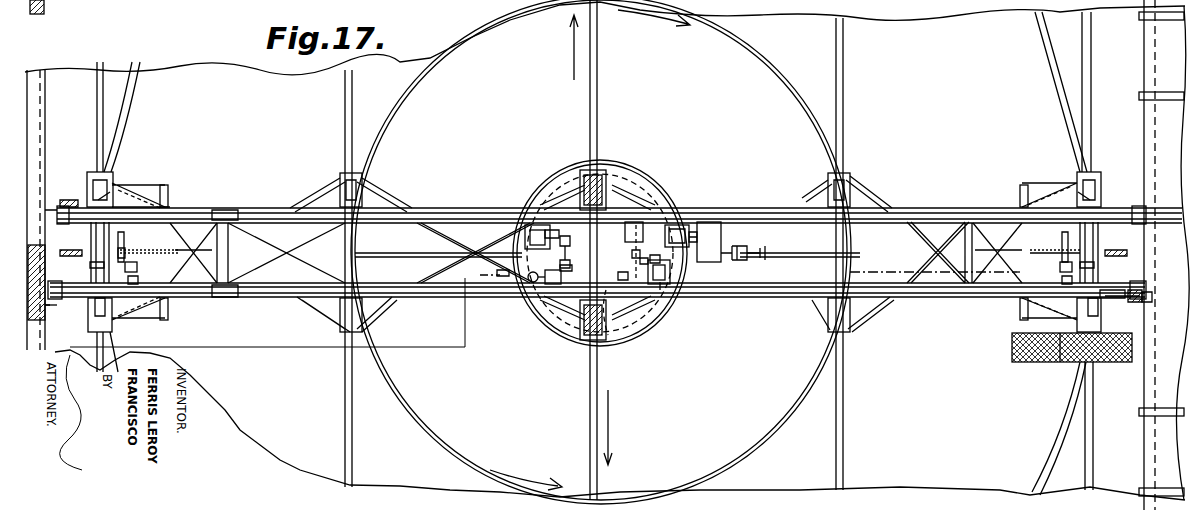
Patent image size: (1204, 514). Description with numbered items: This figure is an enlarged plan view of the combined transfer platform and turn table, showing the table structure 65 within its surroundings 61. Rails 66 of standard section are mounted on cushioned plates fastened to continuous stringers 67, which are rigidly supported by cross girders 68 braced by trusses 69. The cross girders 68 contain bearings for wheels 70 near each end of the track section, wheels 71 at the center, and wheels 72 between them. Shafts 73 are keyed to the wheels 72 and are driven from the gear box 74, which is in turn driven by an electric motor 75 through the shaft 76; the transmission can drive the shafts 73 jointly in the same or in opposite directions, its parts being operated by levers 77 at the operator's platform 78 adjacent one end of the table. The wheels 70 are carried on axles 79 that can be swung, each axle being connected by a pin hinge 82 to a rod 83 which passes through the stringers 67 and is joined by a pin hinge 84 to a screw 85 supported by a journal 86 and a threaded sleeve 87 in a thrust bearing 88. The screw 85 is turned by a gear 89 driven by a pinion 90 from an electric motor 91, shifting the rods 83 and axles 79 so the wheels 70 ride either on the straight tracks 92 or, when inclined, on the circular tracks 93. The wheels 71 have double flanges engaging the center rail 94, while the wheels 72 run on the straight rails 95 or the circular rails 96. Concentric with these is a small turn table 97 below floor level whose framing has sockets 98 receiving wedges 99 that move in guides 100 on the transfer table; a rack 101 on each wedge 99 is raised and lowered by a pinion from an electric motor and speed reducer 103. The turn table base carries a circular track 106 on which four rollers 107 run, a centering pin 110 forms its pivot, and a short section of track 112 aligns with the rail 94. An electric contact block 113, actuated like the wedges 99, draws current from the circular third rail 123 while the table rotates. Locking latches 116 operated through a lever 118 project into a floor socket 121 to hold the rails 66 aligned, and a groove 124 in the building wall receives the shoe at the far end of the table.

The frame 61 is at (268, 438).
The truss assembly 65 is at (278, 322).
The rails 66 is at (888, 210).
The stringers 67 is at (925, 208).
The cross girders 68 is at (110, 176).
The trusses 69 is at (310, 190).
The wheels 70 is at (104, 196).
The wheels 71 is at (598, 180).
The wheels 72 is at (366, 258).
The shafts 73 is at (390, 252).
The gear box 74 is at (712, 240).
The electric motor 75 is at (677, 224).
The shaft 76 is at (693, 230).
The levers 77 is at (1064, 364).
The operator's platform 78 is at (1024, 374).
The axles 79 is at (130, 190).
The pin hinge 82 is at (166, 188).
The rods 83 is at (172, 204).
The pin hinge 84 is at (160, 252).
The screw 85 is at (137, 266).
The journal 86 is at (175, 262).
The threaded sleeve 87 is at (85, 250).
The thrust bearing 88 is at (92, 266).
The gear 89 is at (120, 248).
The pinion 90 is at (1108, 268).
The electric motor 91 is at (138, 286).
The straight tracks 92 is at (97, 95).
The circular tracks 93 is at (132, 88).
The rail 94 is at (598, 82).
The straight rails 95 is at (345, 105).
The circular rails 96 is at (402, 93).
The turn table 97 is at (548, 162).
The sockets 98 is at (528, 226).
The wedges 99 is at (548, 228).
The guides 100 is at (660, 286).
The rack 101 is at (572, 241).
The electric motor and speed reducer 103 is at (548, 286).
The circular track 106 is at (608, 336).
The rollers 107 is at (483, 269).
The centering pin 110 is at (600, 245).
The short section of track 112 is at (636, 258).
The electric contact block 113 is at (633, 222).
The latches 116 is at (1140, 292).
The lever 118 is at (70, 200).
The socket 121 is at (1150, 295).
The third rail 123 is at (566, 290).
The groove 124 is at (50, 305).